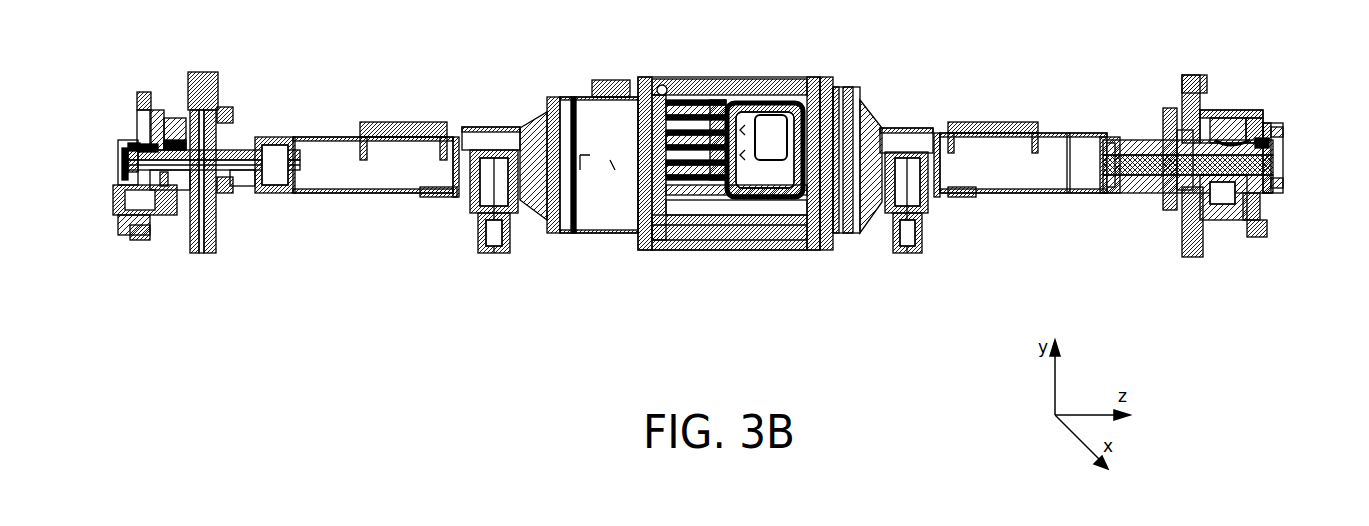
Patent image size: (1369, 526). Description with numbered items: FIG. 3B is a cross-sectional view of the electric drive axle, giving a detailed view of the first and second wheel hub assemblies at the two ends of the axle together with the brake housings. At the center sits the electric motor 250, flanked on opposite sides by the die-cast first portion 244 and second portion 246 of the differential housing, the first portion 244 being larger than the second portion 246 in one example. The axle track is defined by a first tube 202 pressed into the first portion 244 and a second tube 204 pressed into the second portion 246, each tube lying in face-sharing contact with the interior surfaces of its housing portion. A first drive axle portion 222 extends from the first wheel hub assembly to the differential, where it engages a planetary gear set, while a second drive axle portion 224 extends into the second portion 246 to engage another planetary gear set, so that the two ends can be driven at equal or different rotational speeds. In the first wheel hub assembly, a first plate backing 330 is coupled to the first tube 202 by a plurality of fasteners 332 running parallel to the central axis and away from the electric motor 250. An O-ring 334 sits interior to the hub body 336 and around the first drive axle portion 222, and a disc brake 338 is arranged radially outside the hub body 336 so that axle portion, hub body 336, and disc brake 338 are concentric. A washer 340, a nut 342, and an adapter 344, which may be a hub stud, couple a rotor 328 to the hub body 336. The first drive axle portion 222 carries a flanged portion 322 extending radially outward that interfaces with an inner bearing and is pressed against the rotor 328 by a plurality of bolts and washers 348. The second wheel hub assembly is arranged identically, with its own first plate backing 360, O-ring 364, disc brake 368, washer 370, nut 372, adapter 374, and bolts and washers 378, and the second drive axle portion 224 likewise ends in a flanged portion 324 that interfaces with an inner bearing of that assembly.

The first tube 202 is at (382, 193).
The second tube 204 is at (1027, 193).
The first drive axle portion 222 is at (257, 153).
The second drive axle portion 224 is at (1100, 137).
The first portion of the differential housing 244 is at (553, 97).
The second portion of the differential housing 246 is at (835, 97).
The electric motor 250 is at (653, 252).
The flanged portion 322 is at (118, 147).
The flanged portion 324 is at (1268, 143).
The rotor 328 is at (135, 232).
The first plate backing 330 is at (217, 100).
The plurality of fasteners 332 is at (215, 120).
The O-ring 334 is at (180, 143).
The hub body 336 is at (153, 143).
The disc brake 338 is at (152, 148).
The washer 340 is at (140, 150).
The nut 342 is at (135, 147).
The adapter 344 is at (125, 223).
The plurality of bolts and washers 348 is at (127, 202).
The first plate backing 360 is at (1172, 110).
The O-ring 364 is at (1207, 137).
The disc brake 368 is at (1245, 140).
The washer 370 is at (1253, 133).
The nut 372 is at (1263, 135).
The adapter 374 is at (1263, 222).
The plurality of bolts and washers 378 is at (1255, 200).